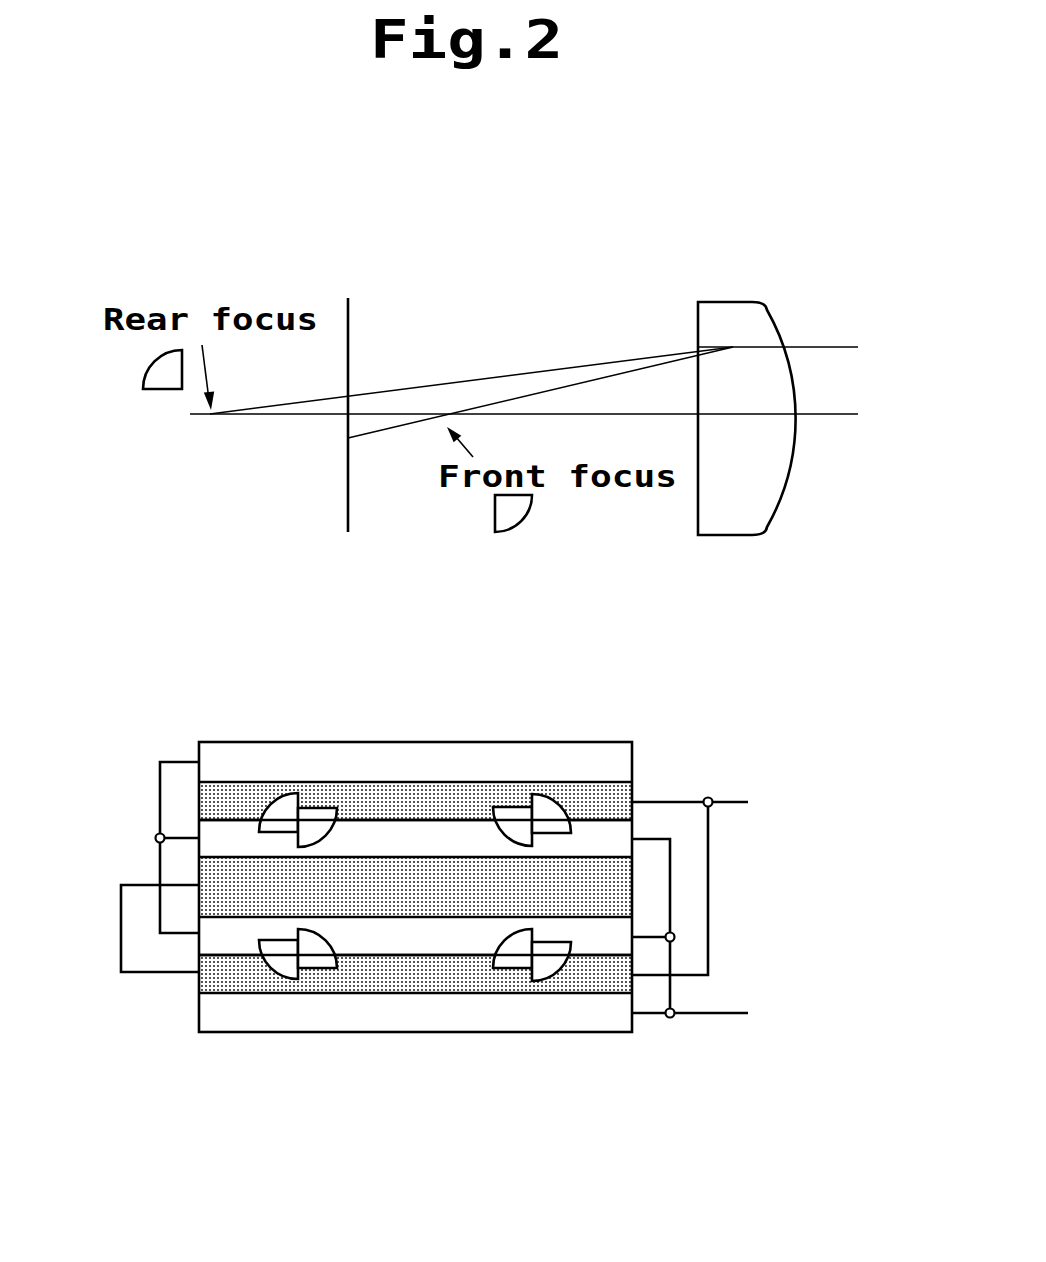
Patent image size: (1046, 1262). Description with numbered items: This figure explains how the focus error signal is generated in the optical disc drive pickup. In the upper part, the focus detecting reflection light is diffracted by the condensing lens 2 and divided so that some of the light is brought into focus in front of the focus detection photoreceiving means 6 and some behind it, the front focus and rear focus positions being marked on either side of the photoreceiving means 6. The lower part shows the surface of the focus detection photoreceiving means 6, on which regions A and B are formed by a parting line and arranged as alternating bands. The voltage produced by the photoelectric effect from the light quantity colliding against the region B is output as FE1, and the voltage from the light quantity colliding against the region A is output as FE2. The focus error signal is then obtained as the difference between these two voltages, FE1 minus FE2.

The condensing lens 2 is at (728, 302).
The focus detection photoreceiving means 6 is at (349, 308).
The region A is at (402, 845).
The region B is at (222, 792).
The voltage FE1 is at (724, 880).
The voltage FE2 is at (724, 936).